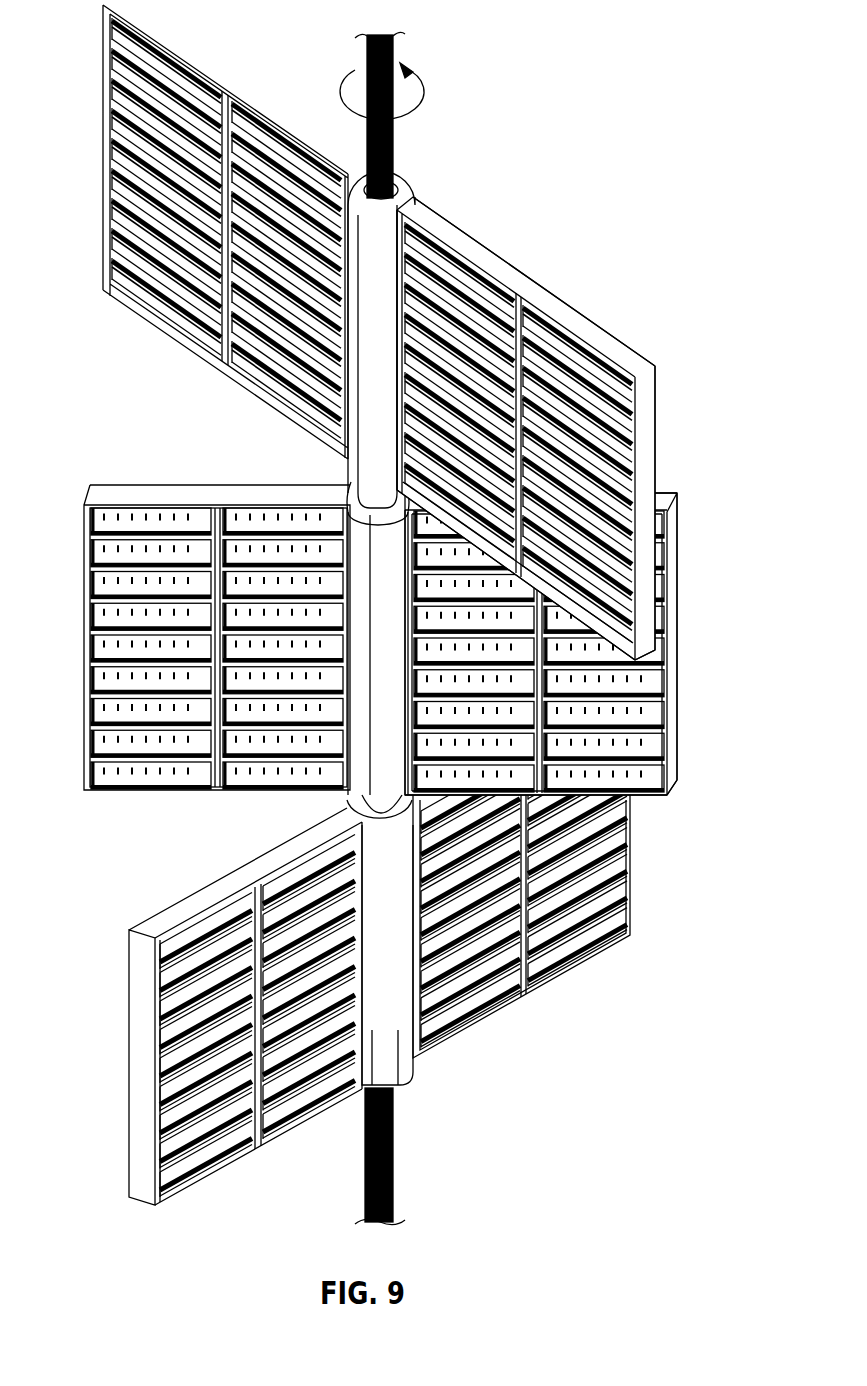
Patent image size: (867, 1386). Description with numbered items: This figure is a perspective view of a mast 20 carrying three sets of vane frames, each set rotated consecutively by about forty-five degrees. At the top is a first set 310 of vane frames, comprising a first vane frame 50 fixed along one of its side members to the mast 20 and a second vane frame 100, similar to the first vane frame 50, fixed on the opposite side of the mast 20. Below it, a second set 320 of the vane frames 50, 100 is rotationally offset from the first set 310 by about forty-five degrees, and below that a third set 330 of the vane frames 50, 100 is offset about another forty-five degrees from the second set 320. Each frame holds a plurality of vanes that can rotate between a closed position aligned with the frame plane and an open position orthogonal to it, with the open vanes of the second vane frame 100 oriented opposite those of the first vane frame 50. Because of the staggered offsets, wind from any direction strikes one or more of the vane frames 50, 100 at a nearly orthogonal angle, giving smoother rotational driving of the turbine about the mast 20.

The mast 20 is at (398, 60).
The first vane frame 50 is at (207, 288).
The second vane frame 100 is at (440, 382).
The first set of vane frames 310 is at (700, 452).
The second set of vane frames 320 is at (698, 620).
The third set of vane frames 330 is at (656, 845).